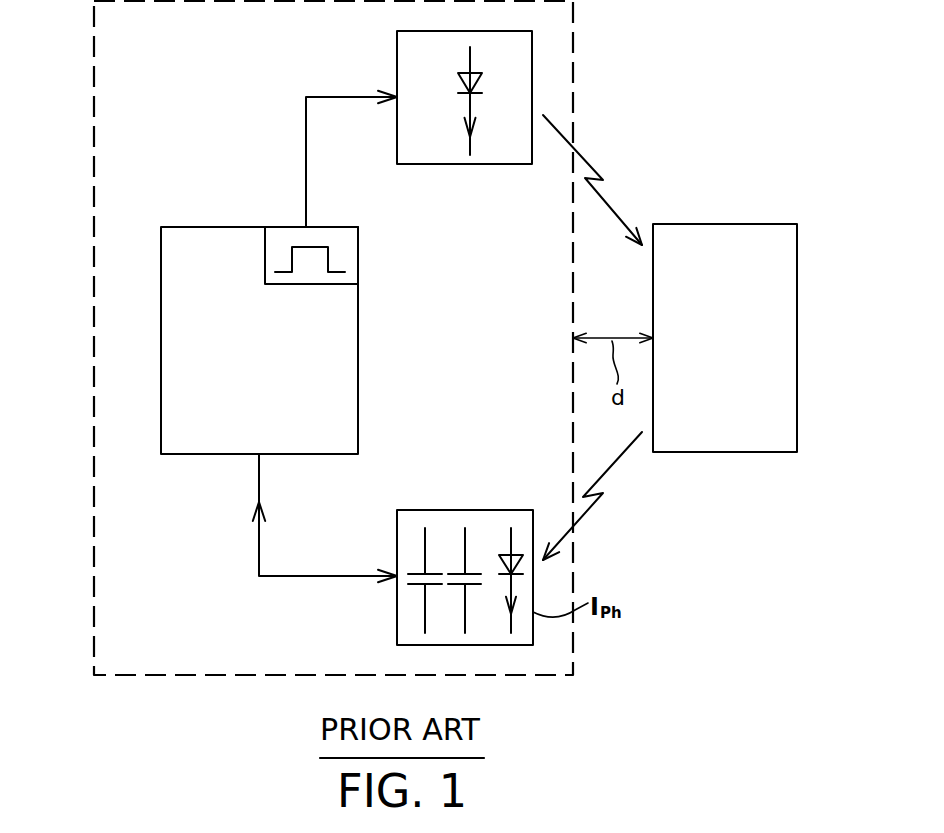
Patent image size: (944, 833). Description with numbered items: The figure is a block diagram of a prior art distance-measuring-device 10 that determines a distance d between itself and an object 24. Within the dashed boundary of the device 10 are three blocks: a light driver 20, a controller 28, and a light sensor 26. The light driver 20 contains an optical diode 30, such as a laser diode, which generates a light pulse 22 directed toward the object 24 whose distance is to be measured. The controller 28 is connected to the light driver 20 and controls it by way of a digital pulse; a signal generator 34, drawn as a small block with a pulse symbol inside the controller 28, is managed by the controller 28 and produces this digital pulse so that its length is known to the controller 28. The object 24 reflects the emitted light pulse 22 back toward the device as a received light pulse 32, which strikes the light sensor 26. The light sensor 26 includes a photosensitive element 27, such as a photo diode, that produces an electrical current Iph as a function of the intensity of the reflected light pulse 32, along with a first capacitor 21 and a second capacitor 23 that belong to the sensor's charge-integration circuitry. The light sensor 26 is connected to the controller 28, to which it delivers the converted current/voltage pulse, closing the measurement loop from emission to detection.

The distance-measuring-device 10 is at (78, 110).
The light driver 20 is at (532, 68).
The first capacitor 21 is at (420, 583).
The light pulse 22 is at (613, 210).
The second capacitor 23 is at (456, 572).
The object 24 is at (797, 342).
The light sensor 26 is at (414, 510).
The photosensitive element 27 is at (500, 555).
The controller 28 is at (358, 365).
The optical diode 30 is at (457, 86).
The received light pulse 32 is at (613, 462).
The signal generator 34 is at (310, 285).